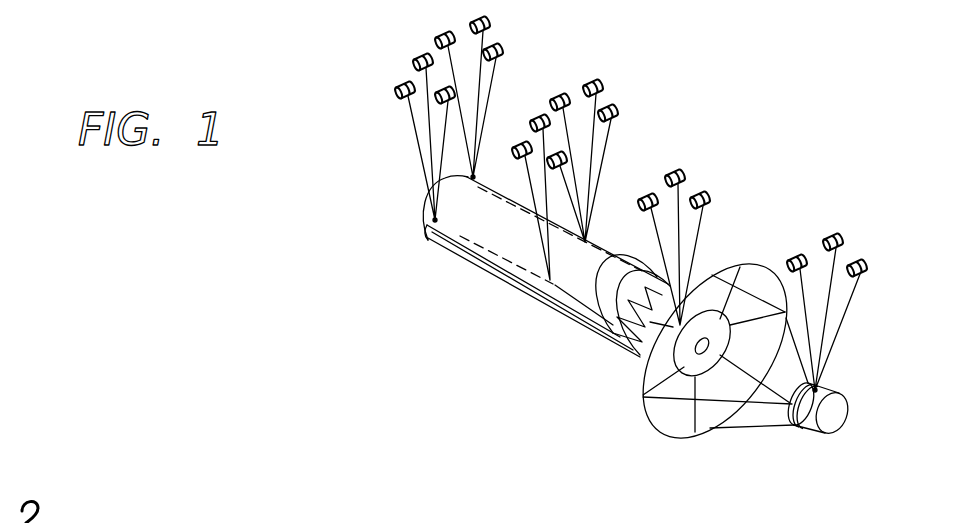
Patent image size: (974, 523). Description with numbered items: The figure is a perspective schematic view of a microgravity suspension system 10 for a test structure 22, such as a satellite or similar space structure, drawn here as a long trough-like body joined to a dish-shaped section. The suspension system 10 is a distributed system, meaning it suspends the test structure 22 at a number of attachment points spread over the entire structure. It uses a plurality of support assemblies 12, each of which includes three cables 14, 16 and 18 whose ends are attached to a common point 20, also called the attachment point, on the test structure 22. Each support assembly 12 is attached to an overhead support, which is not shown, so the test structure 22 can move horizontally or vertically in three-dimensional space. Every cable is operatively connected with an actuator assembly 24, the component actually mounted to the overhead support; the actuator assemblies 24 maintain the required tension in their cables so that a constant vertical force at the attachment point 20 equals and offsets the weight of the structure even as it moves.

The suspension system 10 is at (705, 178).
The support assembly 12 is at (368, 87).
The cable 14 is at (413, 107).
The cable 16 is at (427, 147).
The cable 18 is at (437, 192).
The common point 20 is at (427, 232).
The test structure 22 is at (585, 315).
The actuator assembly 24 is at (427, 57).